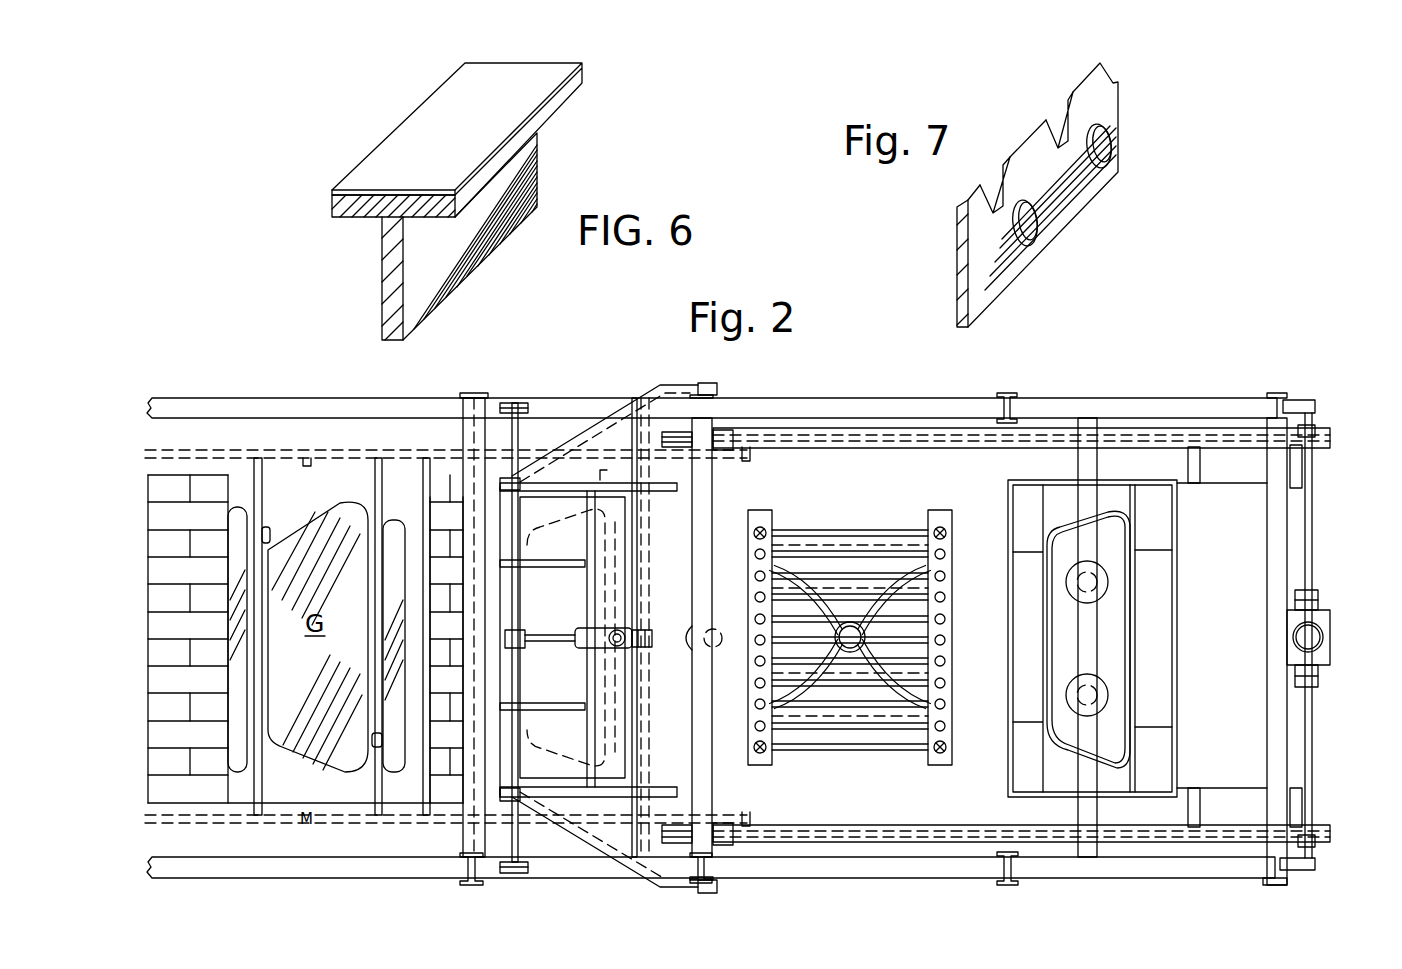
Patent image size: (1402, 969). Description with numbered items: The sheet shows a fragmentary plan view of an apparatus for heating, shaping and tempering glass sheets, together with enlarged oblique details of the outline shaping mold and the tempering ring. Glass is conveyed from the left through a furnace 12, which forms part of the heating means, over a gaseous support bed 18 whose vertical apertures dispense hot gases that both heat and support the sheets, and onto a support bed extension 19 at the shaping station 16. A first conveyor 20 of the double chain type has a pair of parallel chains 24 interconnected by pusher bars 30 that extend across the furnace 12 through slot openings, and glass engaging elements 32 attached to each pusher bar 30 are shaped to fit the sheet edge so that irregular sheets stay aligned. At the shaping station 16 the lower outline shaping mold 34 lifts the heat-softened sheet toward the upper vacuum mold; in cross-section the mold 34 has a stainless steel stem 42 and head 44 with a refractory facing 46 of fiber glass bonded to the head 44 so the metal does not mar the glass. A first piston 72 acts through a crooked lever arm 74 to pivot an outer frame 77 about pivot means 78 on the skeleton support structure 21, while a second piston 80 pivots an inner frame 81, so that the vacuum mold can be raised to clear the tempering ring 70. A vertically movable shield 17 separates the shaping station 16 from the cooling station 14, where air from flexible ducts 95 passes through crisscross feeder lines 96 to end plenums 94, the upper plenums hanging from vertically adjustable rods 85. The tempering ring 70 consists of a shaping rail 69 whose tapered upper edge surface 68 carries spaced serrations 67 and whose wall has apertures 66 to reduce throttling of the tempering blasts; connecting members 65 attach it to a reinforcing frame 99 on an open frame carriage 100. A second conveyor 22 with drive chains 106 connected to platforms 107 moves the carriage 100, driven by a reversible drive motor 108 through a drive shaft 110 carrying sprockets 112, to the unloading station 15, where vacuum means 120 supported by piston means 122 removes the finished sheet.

In FIG. 2, the furnace 12 is at (138, 766).
In FIG. 2, the cooling station 14 is at (882, 635).
In FIG. 2, the unloading station 15 is at (1168, 388).
In FIG. 2, the shaping station 16 is at (588, 380).
In FIG. 2, the vertically movable shield 17 is at (742, 497).
In FIG. 2, the gaseous support bed 18 is at (308, 501).
In FIG. 2, the support bed extension 19 is at (568, 596).
In FIG. 2, the first conveyor 20 is at (172, 449).
In FIG. 2, the skeleton support structure 21 is at (1047, 388).
In FIG. 2, the second conveyor 22 is at (876, 430).
In FIG. 2, the chains 24 is at (153, 458).
In FIG. 2, the pusher bars 30 is at (256, 465).
In FIG. 2, the glass engaging elements 32 is at (267, 537).
In FIG. 6, the lower outline shaping mold 34 is at (435, 201).
In FIG. 2, the lower outline shaping mold 34 is at (545, 515).
In FIG. 6, the stem 42 is at (390, 285).
In FIG. 6, the head 44 is at (365, 210).
In FIG. 6, the refractory facing 46 is at (350, 190).
In FIG. 2, the connecting members 65 is at (1040, 548).
In FIG. 7, the apertures 66 is at (1032, 228).
In FIG. 7, the serrations 67 is at (1047, 122).
In FIG. 7, the upper edge surface 68 is at (977, 197).
In FIG. 7, the shaping rail 69 is at (1063, 195).
In FIG. 2, the shaping rail 69 is at (1010, 645).
In FIG. 2, the tempering ring 70 is at (1087, 644).
In FIG. 2, the first piston 72 is at (585, 650).
In FIG. 2, the crooked lever arm 74 is at (510, 795).
In FIG. 2, the outer frame 77 is at (570, 835).
In FIG. 2, the pivot means 78 is at (700, 385).
In FIG. 2, the second piston 80 is at (608, 630).
In FIG. 2, the inner frame 81 is at (620, 468).
In FIG. 2, the vertically adjustable rods 85 is at (760, 527).
In FIG. 2, the end plenum 94 is at (757, 768).
In FIG. 2, the flexible ducts 95 is at (853, 618).
In FIG. 2, the feeder lines 96 is at (888, 683).
In FIG. 2, the reinforcing frame 99 is at (1008, 776).
In FIG. 2, the open frame carriage 100 is at (1215, 493).
In FIG. 2, the drive chains 106 is at (950, 446).
In FIG. 2, the platforms 107 is at (1297, 463).
In FIG. 2, the reversible drive motor 108 is at (1330, 625).
In FIG. 2, the drive shaft 110 is at (1312, 539).
In FIG. 2, the sprockets 112 is at (1312, 428).
In FIG. 2, the vacuum means 120 is at (1068, 695).
In FIG. 2, the piston means 122 is at (1066, 586).